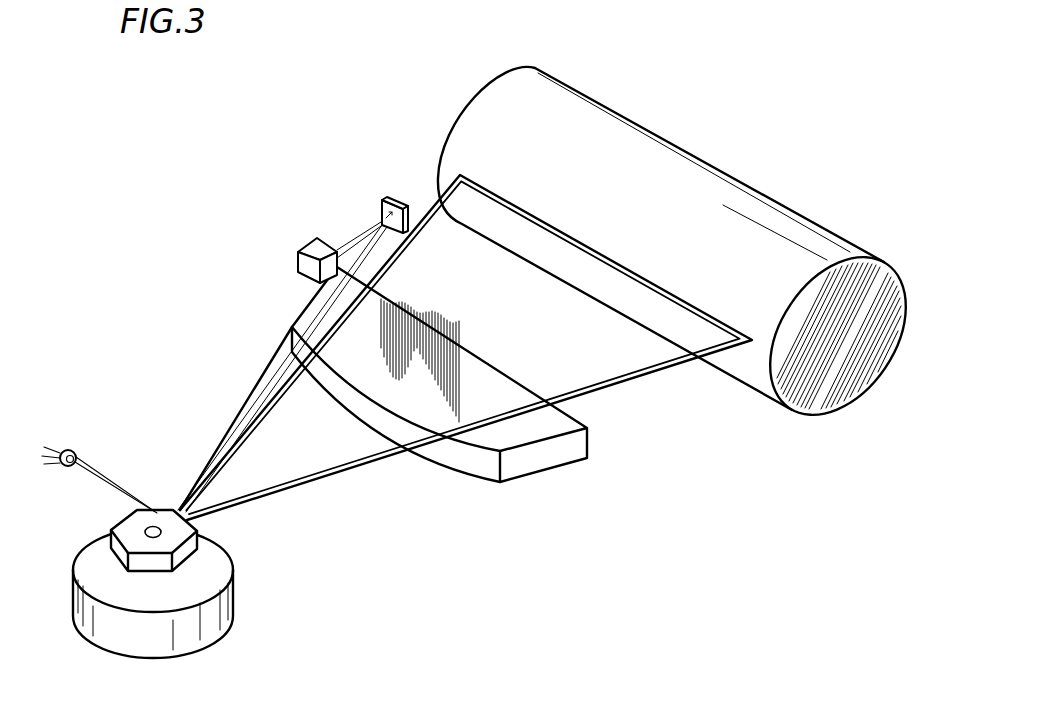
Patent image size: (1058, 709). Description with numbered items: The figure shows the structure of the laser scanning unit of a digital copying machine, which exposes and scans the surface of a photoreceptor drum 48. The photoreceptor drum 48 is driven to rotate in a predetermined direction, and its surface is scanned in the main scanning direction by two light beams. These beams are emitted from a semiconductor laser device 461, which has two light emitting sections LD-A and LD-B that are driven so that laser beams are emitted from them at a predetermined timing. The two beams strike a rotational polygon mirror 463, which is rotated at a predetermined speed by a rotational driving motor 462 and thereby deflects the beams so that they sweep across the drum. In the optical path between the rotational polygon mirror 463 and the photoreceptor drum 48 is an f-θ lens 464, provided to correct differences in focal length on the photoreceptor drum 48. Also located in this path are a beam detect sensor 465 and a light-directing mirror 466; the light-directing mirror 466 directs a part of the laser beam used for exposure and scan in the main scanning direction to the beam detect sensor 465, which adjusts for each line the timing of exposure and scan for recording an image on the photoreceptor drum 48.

The photoreceptor drum 48 is at (643, 152).
The semiconductor laser device 461 is at (68, 449).
The rotational driving motor 462 is at (218, 551).
The rotational polygon mirror 463 is at (186, 556).
The f-θ lens 464 is at (545, 460).
The beam detect sensor 465 is at (303, 245).
The light-directing mirror 466 is at (401, 199).
The light emitting section LD-A is at (76, 452).
The light emitting section LD-B is at (62, 468).